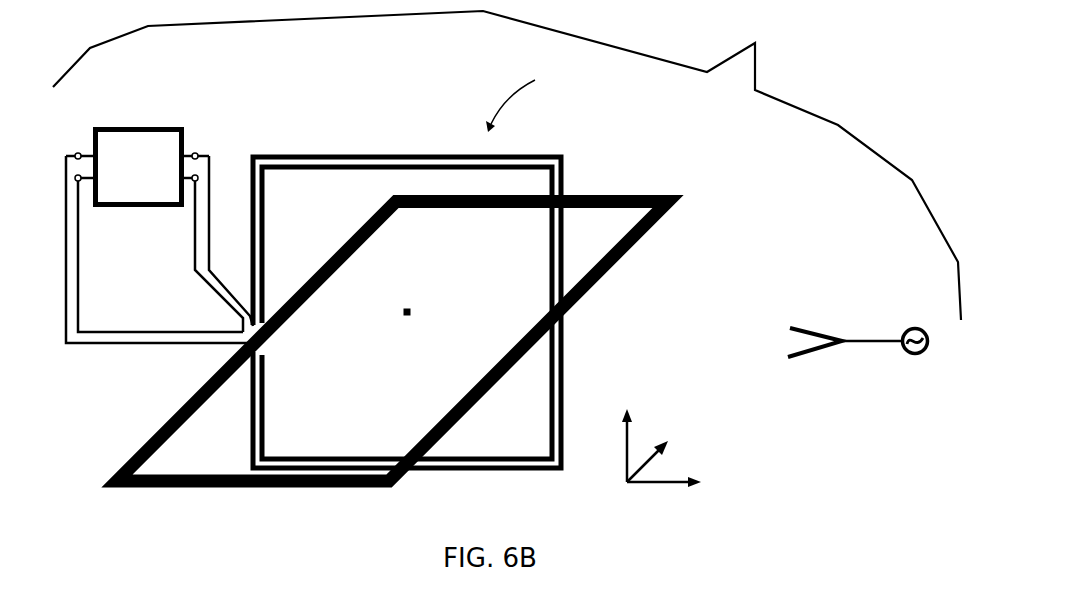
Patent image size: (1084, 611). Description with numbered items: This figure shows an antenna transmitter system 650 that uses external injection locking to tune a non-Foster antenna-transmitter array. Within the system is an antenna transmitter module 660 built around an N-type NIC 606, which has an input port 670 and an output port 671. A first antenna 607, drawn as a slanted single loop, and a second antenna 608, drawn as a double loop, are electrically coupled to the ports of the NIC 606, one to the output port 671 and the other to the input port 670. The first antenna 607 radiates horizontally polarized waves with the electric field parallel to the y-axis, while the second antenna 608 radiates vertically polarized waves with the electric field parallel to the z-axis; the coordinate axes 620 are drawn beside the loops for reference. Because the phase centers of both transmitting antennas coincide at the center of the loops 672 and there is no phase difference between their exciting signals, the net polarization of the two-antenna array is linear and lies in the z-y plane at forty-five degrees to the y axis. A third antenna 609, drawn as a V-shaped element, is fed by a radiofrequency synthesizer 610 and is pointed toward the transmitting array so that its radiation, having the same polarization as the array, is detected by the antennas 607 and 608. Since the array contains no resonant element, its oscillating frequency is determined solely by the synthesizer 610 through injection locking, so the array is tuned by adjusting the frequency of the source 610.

The N-type NIC 606 is at (138, 126).
The first antenna 607 is at (607, 189).
The second antenna 608 is at (401, 155).
The third antenna 609 is at (815, 325).
The radiofrequency synthesizer 610 is at (910, 328).
The coordinate axes 620 is at (660, 483).
The antenna transmitter system 650 is at (507, 165).
The antenna transmitter module 660 is at (538, 94).
The input port 670 is at (77, 151).
The output port 671 is at (199, 151).
The center of the loops 672 is at (412, 308).